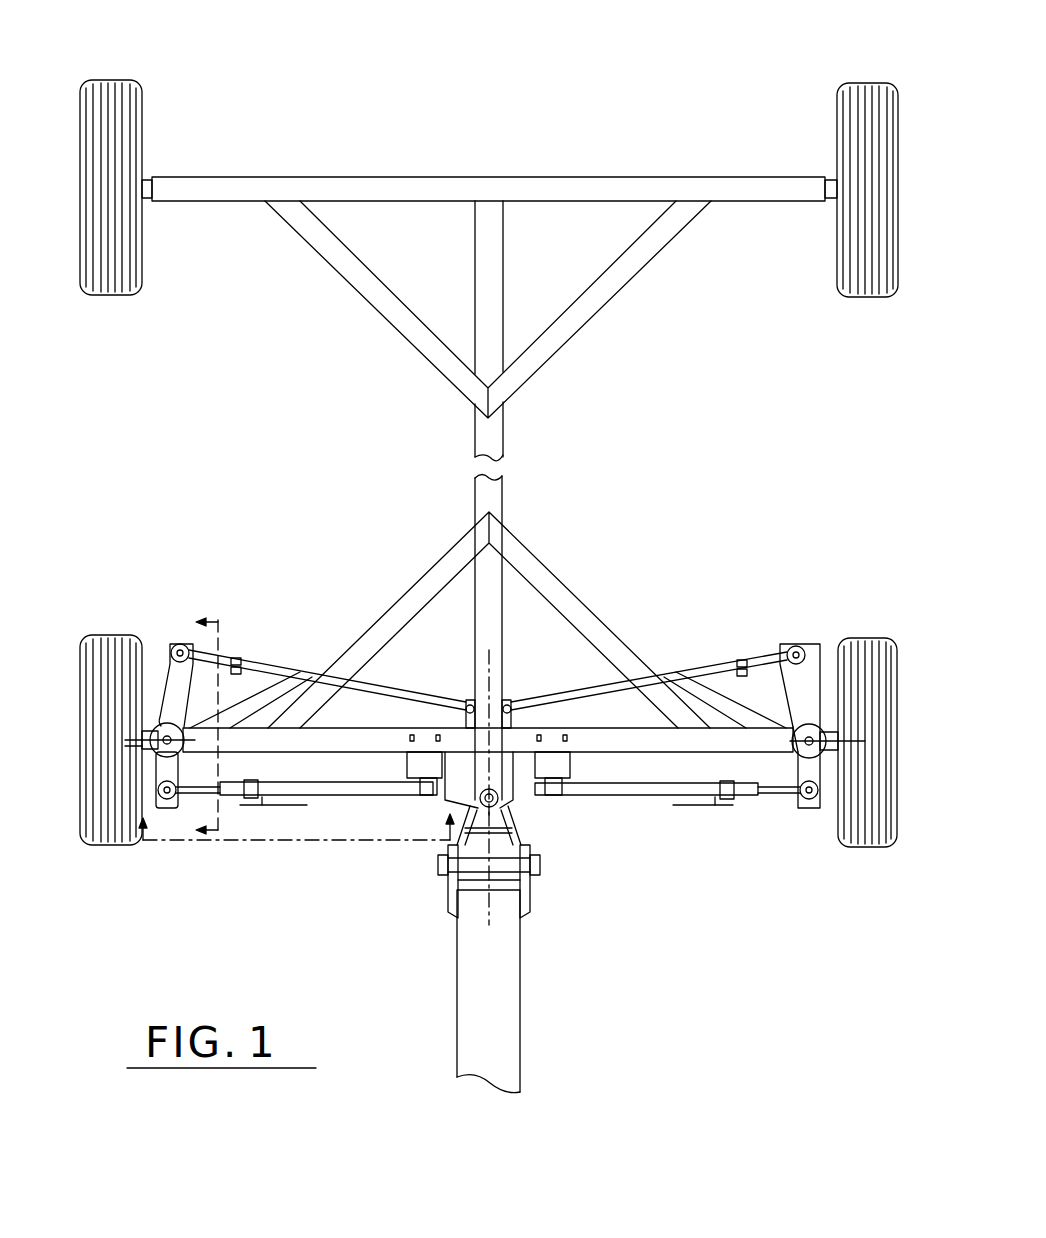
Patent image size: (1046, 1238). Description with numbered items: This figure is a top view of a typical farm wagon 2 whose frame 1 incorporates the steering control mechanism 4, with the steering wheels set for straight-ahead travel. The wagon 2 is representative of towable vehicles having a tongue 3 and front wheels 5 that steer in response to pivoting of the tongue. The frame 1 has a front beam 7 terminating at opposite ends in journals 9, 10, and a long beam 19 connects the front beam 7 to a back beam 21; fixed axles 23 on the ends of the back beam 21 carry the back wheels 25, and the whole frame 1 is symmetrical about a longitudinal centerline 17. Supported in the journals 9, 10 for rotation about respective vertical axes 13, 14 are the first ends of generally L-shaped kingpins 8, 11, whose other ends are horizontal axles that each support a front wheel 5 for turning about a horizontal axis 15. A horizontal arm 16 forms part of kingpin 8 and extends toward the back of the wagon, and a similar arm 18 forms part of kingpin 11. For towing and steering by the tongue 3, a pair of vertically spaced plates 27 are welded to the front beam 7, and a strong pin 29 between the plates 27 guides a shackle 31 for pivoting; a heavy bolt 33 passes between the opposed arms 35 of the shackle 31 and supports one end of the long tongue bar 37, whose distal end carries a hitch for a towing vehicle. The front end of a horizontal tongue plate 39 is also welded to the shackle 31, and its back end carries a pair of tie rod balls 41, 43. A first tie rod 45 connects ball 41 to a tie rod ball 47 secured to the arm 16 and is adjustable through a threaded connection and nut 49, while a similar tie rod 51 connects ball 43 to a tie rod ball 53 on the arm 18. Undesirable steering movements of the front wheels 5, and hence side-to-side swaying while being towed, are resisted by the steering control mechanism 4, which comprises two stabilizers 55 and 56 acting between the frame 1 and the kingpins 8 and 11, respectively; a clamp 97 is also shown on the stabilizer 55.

The frame 1 is at (592, 592).
The farm wagon 2 is at (686, 866).
The tongue 3 is at (585, 1075).
The steering control mechanism 4 is at (316, 786).
The front wheels 5 is at (105, 767).
The front beam 7 is at (675, 742).
The kingpin 8 is at (145, 747).
The journal 9 is at (184, 743).
The journal 10 is at (823, 753).
The kingpin 11 is at (828, 737).
The vertical axis 13 is at (165, 713).
The vertical axis 14 is at (796, 726).
The horizontal axis 15 is at (110, 737).
The horizontal arm 16 is at (176, 646).
The longitudinal centerline 17 is at (488, 675).
The arm 18 is at (787, 647).
The long beam 19 is at (490, 296).
The back beam 21 is at (580, 193).
The fixed axles 23 is at (146, 178).
The back wheels 25 is at (103, 82).
The plates 27 is at (515, 783).
The pin 29 is at (538, 765).
The shackle 31 is at (530, 838).
The bolt 33 is at (503, 872).
The arms 35 is at (452, 905).
The tongue bar 37 is at (500, 1020).
The tongue plate 39 is at (482, 822).
The tie rod ball 41 is at (467, 705).
The tie rod ball 43 is at (510, 703).
The first tie rod 45 is at (274, 673).
The tie rod ball 47 is at (178, 642).
The nut 49 is at (238, 656).
The tie rod 51 is at (698, 673).
The tie rod ball 53 is at (800, 645).
The stabilizer 55 is at (355, 803).
The stabilizer 56 is at (627, 800).
The cylinder clamp 97 is at (177, 774).